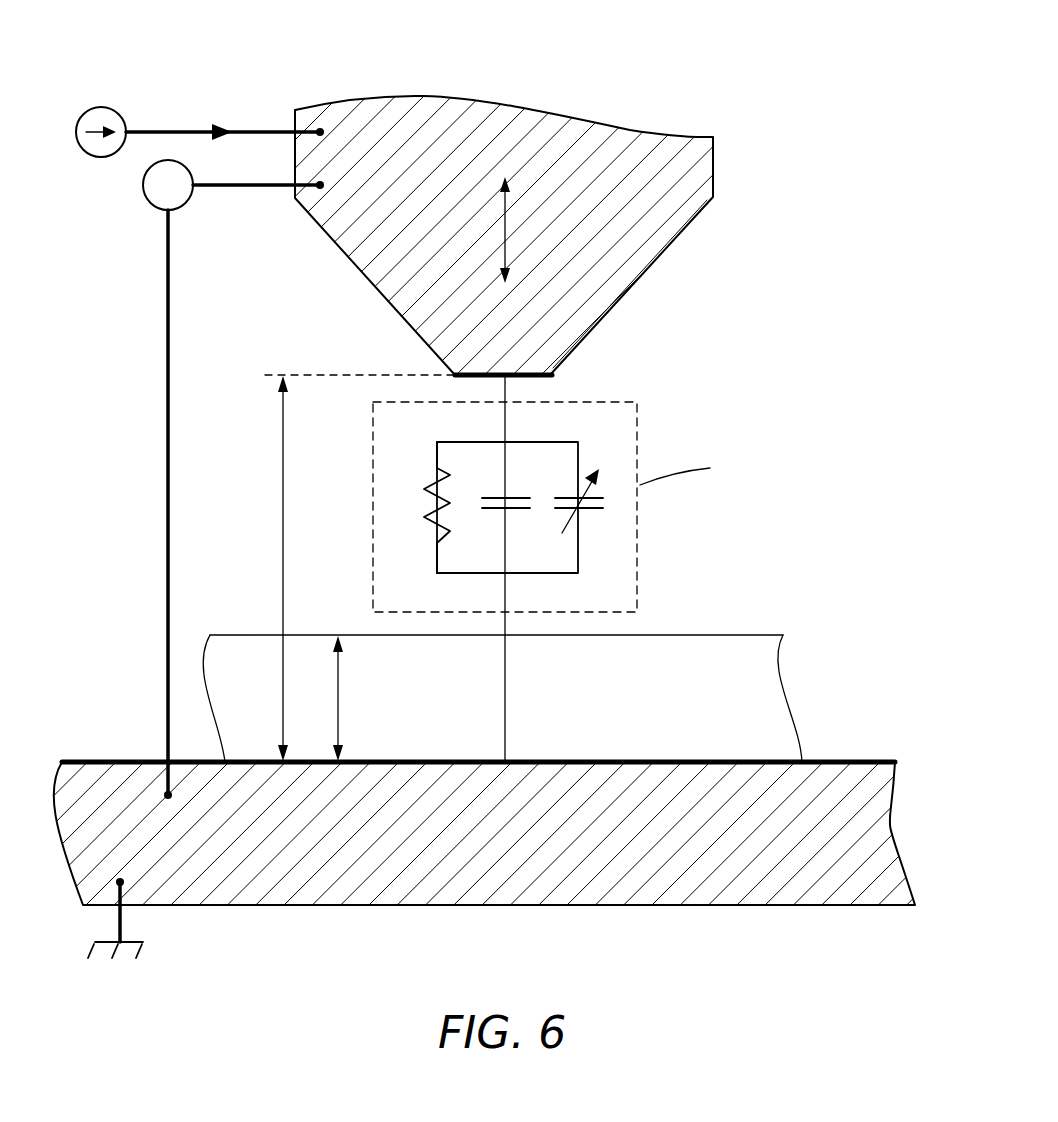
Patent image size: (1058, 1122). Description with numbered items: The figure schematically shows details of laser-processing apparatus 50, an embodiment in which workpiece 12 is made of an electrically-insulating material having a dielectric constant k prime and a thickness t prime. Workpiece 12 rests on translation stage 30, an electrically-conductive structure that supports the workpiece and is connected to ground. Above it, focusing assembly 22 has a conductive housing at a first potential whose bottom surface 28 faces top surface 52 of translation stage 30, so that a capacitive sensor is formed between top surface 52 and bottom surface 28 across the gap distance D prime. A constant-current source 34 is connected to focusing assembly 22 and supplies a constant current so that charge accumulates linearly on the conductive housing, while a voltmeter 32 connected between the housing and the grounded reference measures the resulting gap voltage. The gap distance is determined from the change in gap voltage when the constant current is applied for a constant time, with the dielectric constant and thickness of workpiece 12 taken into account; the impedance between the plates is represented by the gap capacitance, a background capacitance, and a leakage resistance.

The laser-processing apparatus 50 is at (804, 108).
The focusing assembly 22 is at (680, 228).
The bottom surface 28 is at (553, 375).
The constant-current source 34 is at (99, 106).
The voltmeter 32 is at (143, 195).
The workpiece 12 is at (728, 642).
The translation stage 30 is at (853, 770).
The top surface 52 is at (677, 765).